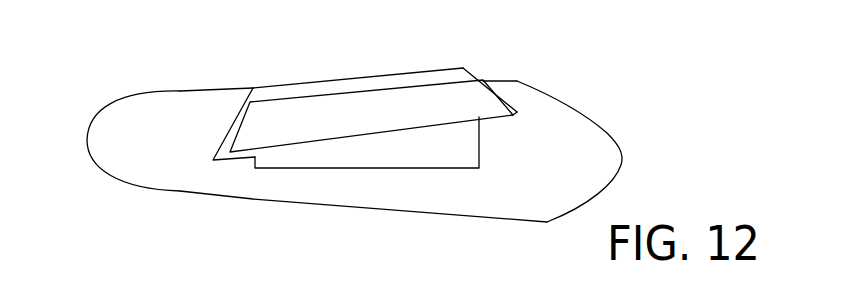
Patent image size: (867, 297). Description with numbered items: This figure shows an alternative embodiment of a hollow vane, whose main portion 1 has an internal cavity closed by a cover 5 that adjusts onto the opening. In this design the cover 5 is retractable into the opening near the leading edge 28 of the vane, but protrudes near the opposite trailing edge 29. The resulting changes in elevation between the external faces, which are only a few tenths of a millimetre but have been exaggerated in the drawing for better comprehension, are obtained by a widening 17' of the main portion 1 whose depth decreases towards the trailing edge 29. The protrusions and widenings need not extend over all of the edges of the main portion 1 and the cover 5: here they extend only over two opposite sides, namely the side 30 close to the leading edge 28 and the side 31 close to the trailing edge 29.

The main portion 1 is at (353, 116).
The cover 5 is at (349, 82).
The widening 17' is at (365, 85).
The leading edge 28 is at (87, 148).
The trailing edge 29 is at (622, 157).
The side 30 is at (259, 81).
The side 31 is at (474, 64).